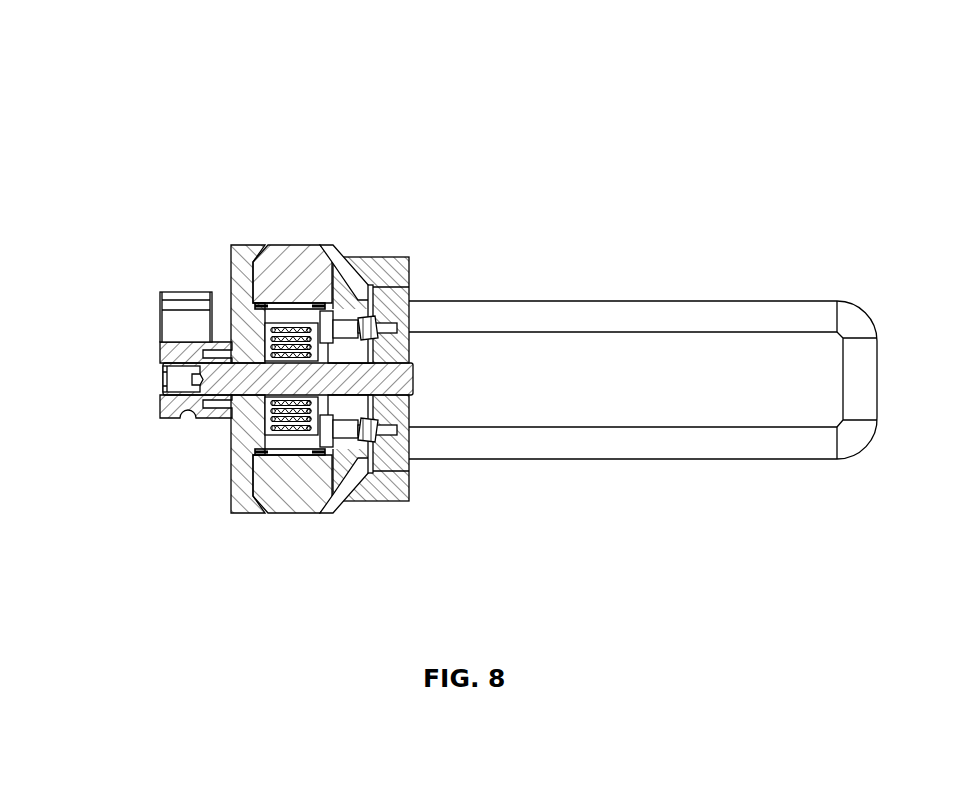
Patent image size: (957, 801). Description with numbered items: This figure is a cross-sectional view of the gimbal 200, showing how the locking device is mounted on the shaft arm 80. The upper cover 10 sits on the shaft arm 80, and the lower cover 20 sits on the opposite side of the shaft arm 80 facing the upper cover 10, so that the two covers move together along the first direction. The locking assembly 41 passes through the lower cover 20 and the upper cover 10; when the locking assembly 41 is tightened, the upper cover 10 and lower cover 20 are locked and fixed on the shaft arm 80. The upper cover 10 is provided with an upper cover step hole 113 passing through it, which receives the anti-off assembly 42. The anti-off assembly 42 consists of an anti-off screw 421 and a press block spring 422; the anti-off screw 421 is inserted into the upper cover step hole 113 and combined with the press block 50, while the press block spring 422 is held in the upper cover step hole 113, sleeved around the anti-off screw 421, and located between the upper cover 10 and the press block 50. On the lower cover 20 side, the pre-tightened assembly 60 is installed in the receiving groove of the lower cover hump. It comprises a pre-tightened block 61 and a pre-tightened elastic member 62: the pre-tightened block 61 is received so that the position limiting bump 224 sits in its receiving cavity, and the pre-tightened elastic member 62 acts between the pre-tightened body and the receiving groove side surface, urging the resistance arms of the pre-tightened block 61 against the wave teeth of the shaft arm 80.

The gimbal 200 is at (550, 44).
The lower cover 20 is at (241, 257).
The shaft arm 80 is at (307, 257).
The position limiting bump 224 is at (295, 443).
The upper cover 10 is at (351, 273).
The upper cover step hole 113 is at (364, 312).
The anti-off assembly 42 is at (365, 467).
The anti-off screw 421 is at (340, 437).
The press block spring 422 is at (363, 430).
The pre-tightened assembly 60 is at (183, 400).
The pre-tightened block 61 is at (265, 436).
The pre-tightened elastic member 62 is at (273, 420).
The locking assembly 41 is at (173, 353).
The press block 50 is at (410, 298).